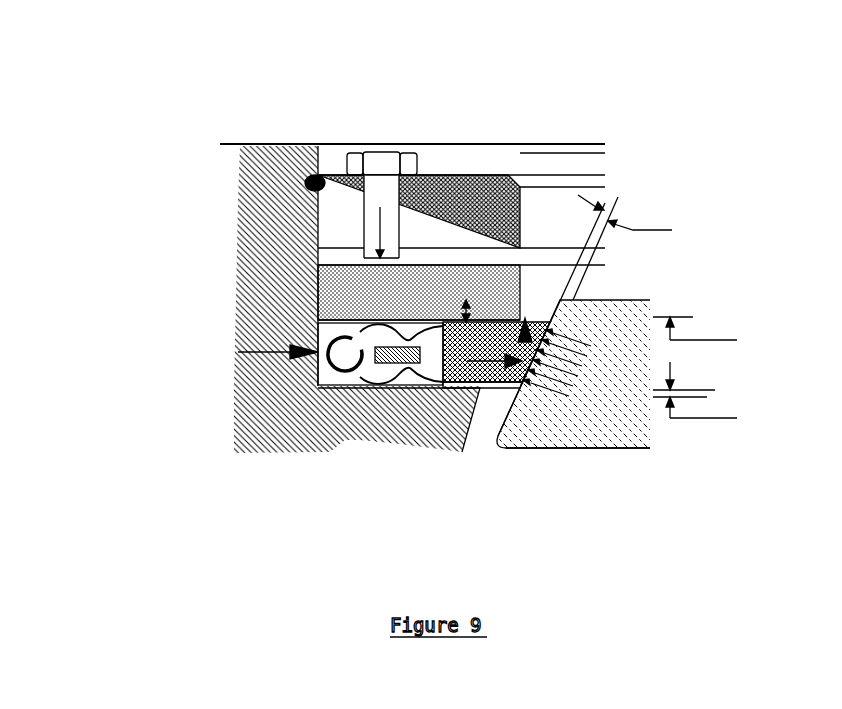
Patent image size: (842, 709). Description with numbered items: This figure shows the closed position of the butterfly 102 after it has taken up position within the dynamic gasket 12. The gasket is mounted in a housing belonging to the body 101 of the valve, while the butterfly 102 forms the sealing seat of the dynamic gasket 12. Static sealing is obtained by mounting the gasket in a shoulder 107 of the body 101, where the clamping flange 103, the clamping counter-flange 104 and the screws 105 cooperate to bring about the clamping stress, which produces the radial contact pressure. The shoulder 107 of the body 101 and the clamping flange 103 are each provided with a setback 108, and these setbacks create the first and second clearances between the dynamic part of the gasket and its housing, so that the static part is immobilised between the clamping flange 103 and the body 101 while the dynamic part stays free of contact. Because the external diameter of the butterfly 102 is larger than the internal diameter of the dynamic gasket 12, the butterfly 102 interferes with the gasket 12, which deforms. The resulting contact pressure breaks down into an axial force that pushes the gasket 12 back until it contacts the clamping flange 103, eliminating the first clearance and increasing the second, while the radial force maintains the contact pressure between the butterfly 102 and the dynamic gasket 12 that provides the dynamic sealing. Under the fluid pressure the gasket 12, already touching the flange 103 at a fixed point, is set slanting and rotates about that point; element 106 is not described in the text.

The body 101 is at (245, 183).
The butterfly 102 is at (607, 348).
The clamping flange 103 is at (445, 283).
The clamping counter-flange 104 is at (452, 212).
The screws 105 is at (347, 159).
The fixing point 106 is at (313, 190).
The shoulder 107 is at (383, 403).
The setback 108 is at (498, 317).
The dynamic gasket 12 is at (530, 447).